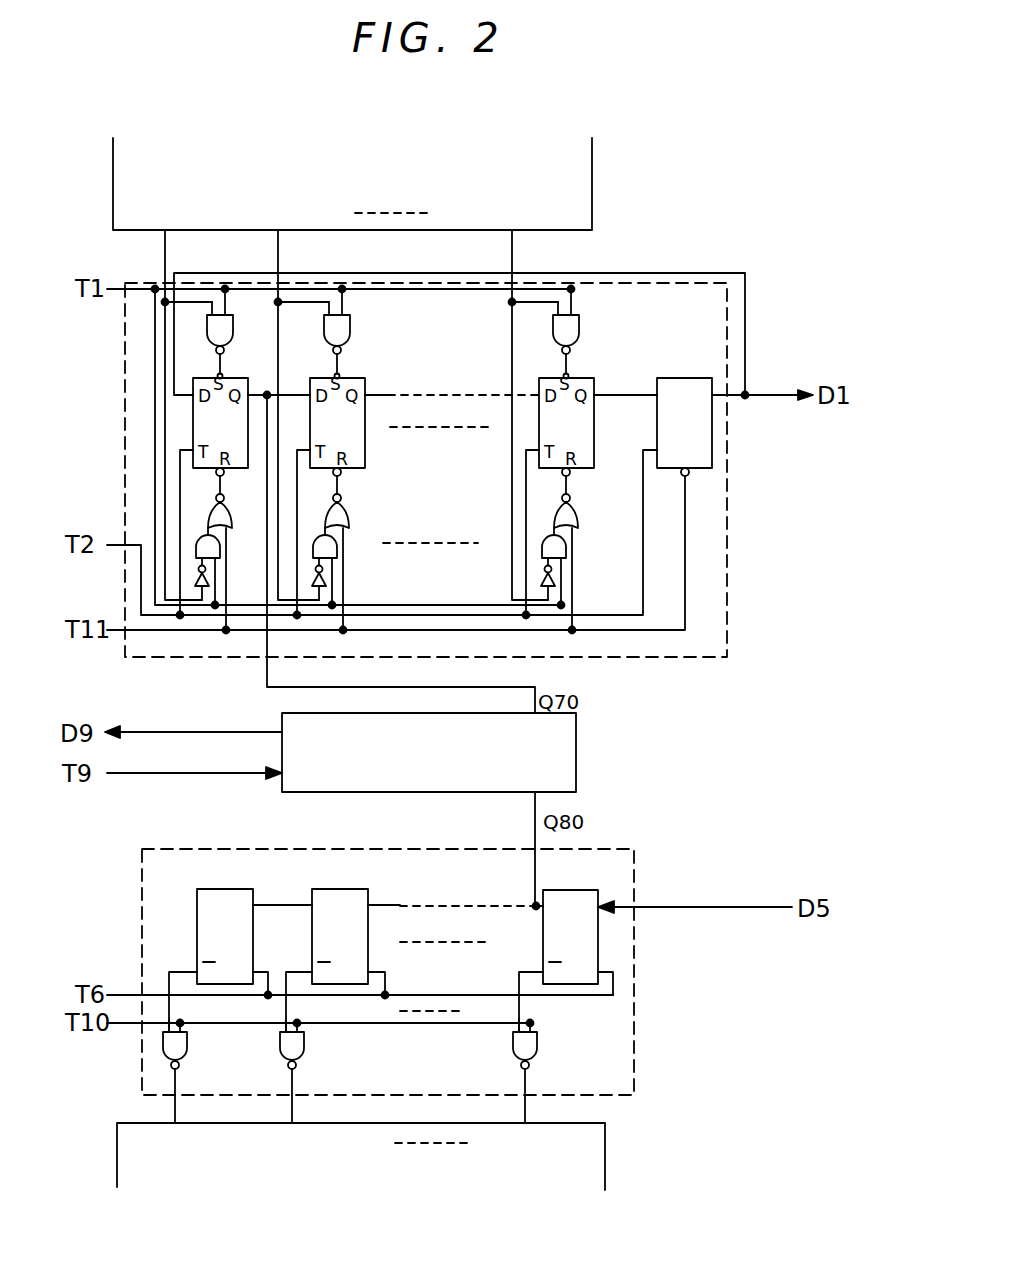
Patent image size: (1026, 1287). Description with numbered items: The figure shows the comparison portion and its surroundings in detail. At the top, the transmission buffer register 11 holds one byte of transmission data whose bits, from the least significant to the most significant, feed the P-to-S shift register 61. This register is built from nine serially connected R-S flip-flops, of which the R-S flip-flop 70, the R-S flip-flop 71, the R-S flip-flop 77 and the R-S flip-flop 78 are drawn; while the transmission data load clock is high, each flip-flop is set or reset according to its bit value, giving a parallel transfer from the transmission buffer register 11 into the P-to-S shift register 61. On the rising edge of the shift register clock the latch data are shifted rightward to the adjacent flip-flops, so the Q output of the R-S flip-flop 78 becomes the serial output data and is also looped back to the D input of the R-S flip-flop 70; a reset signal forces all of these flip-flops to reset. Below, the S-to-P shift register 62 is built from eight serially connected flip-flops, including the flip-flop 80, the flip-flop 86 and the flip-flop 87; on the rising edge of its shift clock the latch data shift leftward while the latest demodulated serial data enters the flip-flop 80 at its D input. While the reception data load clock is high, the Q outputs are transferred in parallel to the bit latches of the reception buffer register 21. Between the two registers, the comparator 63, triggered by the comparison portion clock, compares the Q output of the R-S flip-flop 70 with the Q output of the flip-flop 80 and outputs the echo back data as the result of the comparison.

The transmission buffer register 11 is at (592, 175).
The P-to-S shift register 61 is at (627, 283).
The R-S flip-flop 70 is at (258, 358).
The R-S flip-flop 71 is at (360, 378).
The R-S flip-flop 77 is at (585, 378).
The R-S flip-flop 78 is at (672, 378).
The comparator 63 is at (576, 740).
The S-to-P shift register 62 is at (617, 849).
The flip-flop 87 is at (220, 889).
The flip-flop 86 is at (340, 889).
The flip-flop 80 is at (572, 890).
The reception buffer register 21 is at (605, 1152).